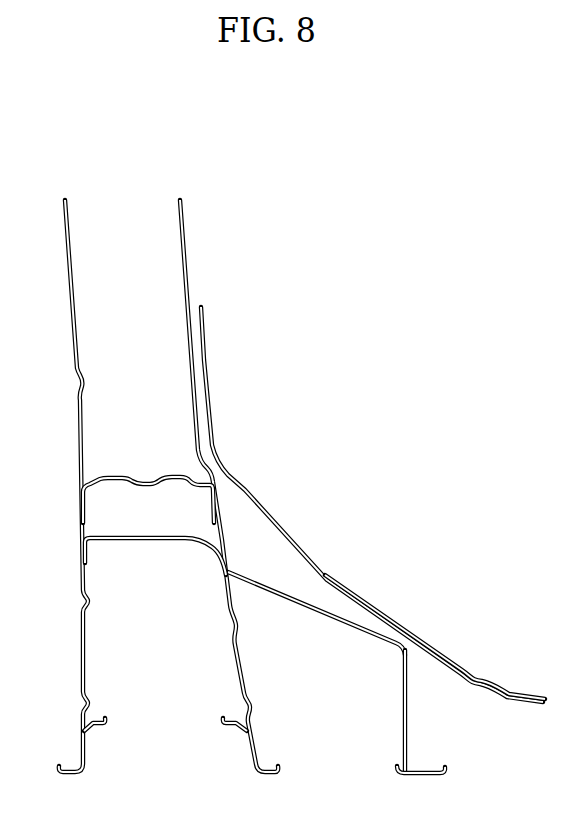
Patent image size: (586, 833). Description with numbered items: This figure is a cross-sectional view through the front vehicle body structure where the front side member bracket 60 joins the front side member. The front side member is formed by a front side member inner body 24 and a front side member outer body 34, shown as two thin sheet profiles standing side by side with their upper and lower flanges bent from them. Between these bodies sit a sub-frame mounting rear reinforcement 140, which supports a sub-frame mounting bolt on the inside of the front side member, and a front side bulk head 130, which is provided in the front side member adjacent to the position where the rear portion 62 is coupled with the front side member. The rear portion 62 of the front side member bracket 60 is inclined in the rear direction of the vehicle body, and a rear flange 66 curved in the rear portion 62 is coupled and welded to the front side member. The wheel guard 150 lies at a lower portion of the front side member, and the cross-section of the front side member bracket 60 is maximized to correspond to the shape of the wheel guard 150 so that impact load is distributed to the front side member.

The front side member inner body 24 is at (82, 677).
The front side member outer body 34 is at (241, 670).
The rear portion 62 is at (293, 602).
The rear flange 66 is at (228, 557).
The front side member bracket 60 is at (422, 728).
The front side bulk head 130 is at (146, 557).
The sub-frame mounting rear reinforcement 140 is at (152, 466).
The wheel guard 150 is at (440, 648).